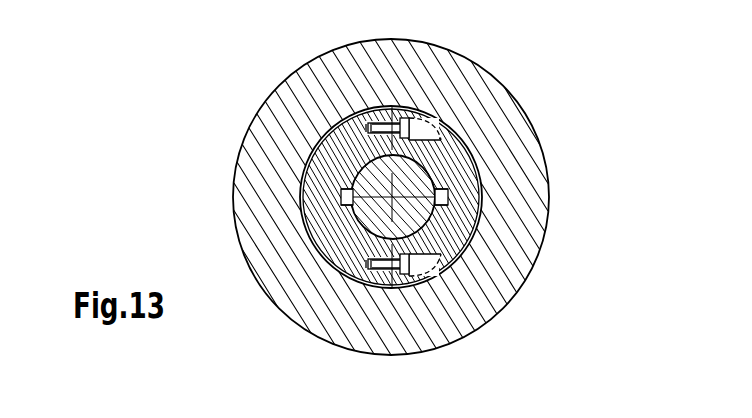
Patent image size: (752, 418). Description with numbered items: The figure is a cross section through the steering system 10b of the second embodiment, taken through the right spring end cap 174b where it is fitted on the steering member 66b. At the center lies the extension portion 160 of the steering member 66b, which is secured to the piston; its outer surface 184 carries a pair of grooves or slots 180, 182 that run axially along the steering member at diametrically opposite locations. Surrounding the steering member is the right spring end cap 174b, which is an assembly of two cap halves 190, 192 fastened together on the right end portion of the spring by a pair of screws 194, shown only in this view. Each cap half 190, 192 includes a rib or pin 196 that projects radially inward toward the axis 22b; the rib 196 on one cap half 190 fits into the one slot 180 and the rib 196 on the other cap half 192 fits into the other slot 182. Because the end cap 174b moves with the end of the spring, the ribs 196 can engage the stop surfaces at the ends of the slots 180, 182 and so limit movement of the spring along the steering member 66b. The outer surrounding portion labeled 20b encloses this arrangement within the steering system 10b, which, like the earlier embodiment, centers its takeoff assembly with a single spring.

The steering system 10b is at (229, 313).
The housing 20b is at (236, 236).
The axis 22b is at (360, 286).
The steering member 66b is at (461, 273).
The extension portion of the steering member 160 is at (443, 253).
The right spring end cap 174b is at (327, 270).
The slot 180 is at (341, 197).
The slot 182 is at (448, 199).
The outer surface 184 is at (426, 173).
The cap half 190 is at (337, 157).
The cap half 192 is at (430, 140).
The screws 194 is at (397, 126).
The rib 196 is at (346, 191).